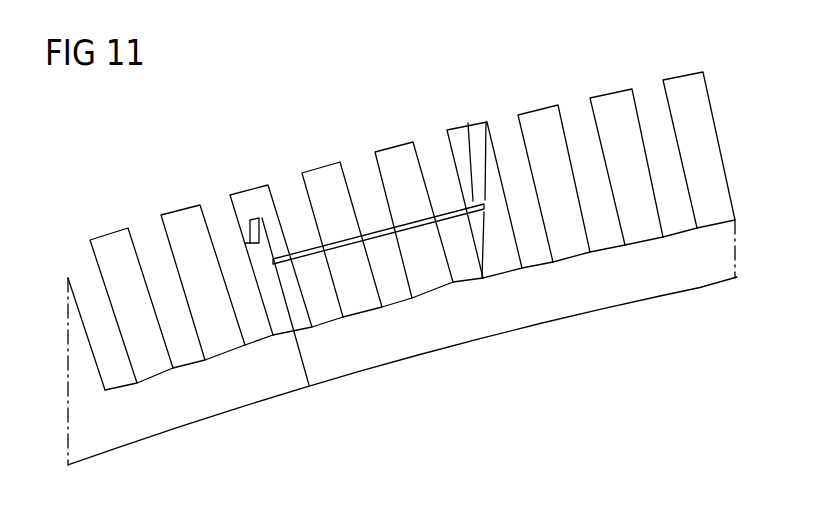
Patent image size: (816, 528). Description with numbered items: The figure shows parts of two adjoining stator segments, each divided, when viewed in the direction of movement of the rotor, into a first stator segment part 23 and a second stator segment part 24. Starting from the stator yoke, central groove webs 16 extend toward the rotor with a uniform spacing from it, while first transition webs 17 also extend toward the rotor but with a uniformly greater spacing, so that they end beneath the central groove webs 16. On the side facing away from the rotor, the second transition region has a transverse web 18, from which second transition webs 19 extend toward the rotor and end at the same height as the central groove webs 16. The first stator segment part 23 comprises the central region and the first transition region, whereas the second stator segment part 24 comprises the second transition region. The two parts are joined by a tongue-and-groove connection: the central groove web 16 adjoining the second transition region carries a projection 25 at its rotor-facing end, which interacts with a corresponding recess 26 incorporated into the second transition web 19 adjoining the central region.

The central groove web 16 is at (102, 236).
The first transition web 17 is at (290, 293).
The transverse web 18 is at (469, 214).
The second transition web 19 is at (328, 167).
The first stator segment part 23 is at (566, 344).
The second stator segment part 24 is at (402, 220).
The projection 25 is at (272, 254).
The recess 26 is at (262, 218).